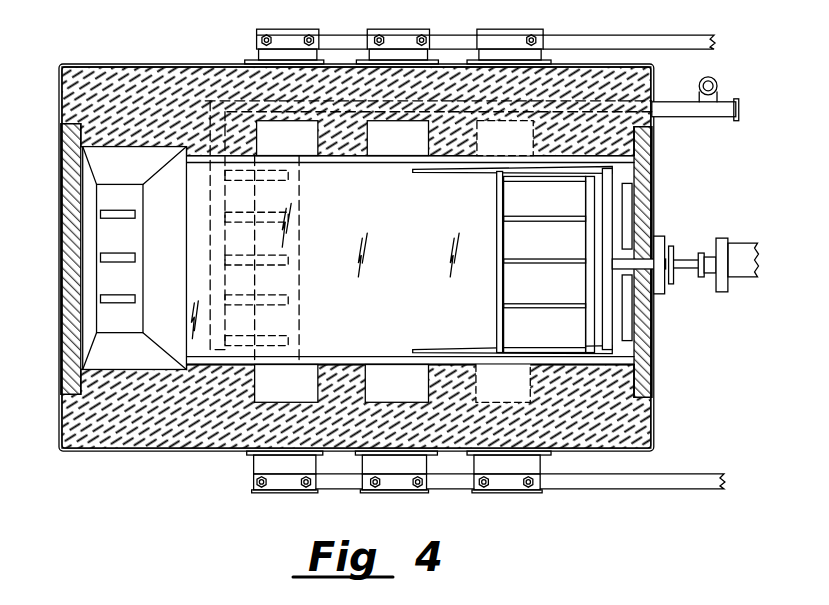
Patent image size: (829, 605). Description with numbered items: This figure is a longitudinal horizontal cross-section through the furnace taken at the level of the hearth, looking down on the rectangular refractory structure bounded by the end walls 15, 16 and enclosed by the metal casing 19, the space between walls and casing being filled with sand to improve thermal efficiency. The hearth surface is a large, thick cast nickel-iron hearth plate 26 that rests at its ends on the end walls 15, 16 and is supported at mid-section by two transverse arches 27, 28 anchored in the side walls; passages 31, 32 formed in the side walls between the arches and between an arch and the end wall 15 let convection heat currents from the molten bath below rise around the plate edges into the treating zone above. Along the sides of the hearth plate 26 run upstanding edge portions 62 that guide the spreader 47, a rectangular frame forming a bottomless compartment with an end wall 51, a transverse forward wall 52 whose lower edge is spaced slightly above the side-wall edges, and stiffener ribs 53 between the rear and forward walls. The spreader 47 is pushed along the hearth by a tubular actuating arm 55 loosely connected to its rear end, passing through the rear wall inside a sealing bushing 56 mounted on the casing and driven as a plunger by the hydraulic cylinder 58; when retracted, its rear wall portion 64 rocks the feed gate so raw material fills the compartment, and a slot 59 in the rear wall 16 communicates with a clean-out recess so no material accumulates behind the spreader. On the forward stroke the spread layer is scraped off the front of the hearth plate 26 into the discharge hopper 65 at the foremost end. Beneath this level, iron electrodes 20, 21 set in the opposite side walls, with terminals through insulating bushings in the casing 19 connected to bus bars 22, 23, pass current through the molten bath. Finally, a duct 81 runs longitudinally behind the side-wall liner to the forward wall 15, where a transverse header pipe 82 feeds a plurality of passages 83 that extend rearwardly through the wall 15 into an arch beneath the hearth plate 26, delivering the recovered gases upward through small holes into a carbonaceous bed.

The end wall 15 is at (57, 148).
The end wall 16 is at (657, 158).
The metal casing 19 is at (657, 380).
The electrode 20 is at (514, 491).
The electrode 21 is at (530, 30).
The bus bar 22 is at (618, 488).
The bus bar 23 is at (597, 32).
The hearth plate 26 is at (418, 308).
The arch 27 is at (338, 366).
The arch 28 is at (440, 354).
The passage 31 is at (393, 365).
The passage 32 is at (300, 144).
The spreader 47 is at (470, 170).
The end wall 51 is at (588, 325).
The forward wall 52 is at (504, 286).
The stiffener rib 53 is at (556, 217).
The tubular actuating arm 55 is at (694, 268).
The bushing 56 is at (665, 250).
The hydraulic cylinder 58 is at (743, 243).
The slot 59 is at (637, 297).
The upstanding edge portion 62 is at (412, 159).
The rear wall portion 64 is at (605, 285).
The discharge hopper 65 is at (135, 258).
The duct 81 is at (672, 105).
The header pipe 82 is at (215, 248).
The passage 83 is at (263, 178).